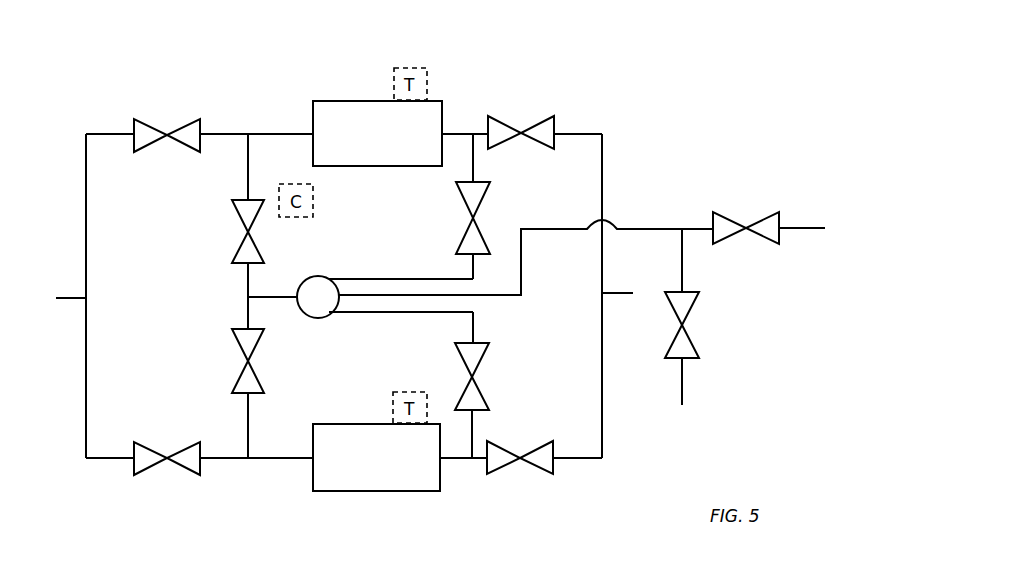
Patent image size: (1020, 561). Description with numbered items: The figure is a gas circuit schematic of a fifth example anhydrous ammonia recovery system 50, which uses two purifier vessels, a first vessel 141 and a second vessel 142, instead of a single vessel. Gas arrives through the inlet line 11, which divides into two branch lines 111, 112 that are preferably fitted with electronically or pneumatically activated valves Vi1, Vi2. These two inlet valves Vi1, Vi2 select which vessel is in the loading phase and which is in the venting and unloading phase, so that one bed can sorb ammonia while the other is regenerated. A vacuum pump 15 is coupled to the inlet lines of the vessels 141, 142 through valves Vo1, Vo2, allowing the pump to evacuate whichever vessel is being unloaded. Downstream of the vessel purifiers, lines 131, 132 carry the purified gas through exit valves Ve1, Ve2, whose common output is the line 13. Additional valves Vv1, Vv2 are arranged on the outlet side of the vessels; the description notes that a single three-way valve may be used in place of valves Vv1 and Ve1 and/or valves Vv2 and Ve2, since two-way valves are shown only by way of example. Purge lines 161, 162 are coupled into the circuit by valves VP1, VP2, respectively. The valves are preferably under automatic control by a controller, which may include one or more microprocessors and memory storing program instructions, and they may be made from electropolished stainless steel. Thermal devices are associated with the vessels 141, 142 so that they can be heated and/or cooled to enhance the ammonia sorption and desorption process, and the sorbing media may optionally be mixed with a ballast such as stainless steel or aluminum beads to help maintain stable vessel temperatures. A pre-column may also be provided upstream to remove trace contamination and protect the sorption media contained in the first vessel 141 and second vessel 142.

The anhydrous ammonia recovery system 50 is at (672, 96).
The inlet line 11 is at (80, 300).
The line 111 is at (85, 218).
The line 112 is at (86, 395).
The line 13 is at (613, 293).
The line 131 is at (602, 163).
The line 132 is at (602, 423).
The first vessel 141 is at (367, 105).
The second vessel 142 is at (363, 487).
The vacuum pump 15 is at (318, 277).
The line 161 is at (682, 385).
The line 162 is at (790, 229).
The valve Vi1 is at (147, 122).
The valve Vi2 is at (152, 468).
The valve Vo1 is at (235, 213).
The valve Vo2 is at (235, 343).
The valve Ve1 is at (502, 120).
The valve Ve2 is at (502, 465).
The valve Vv1 is at (488, 228).
The valve Vv2 is at (482, 393).
The valve VP1 is at (693, 302).
The valve VP2 is at (727, 213).